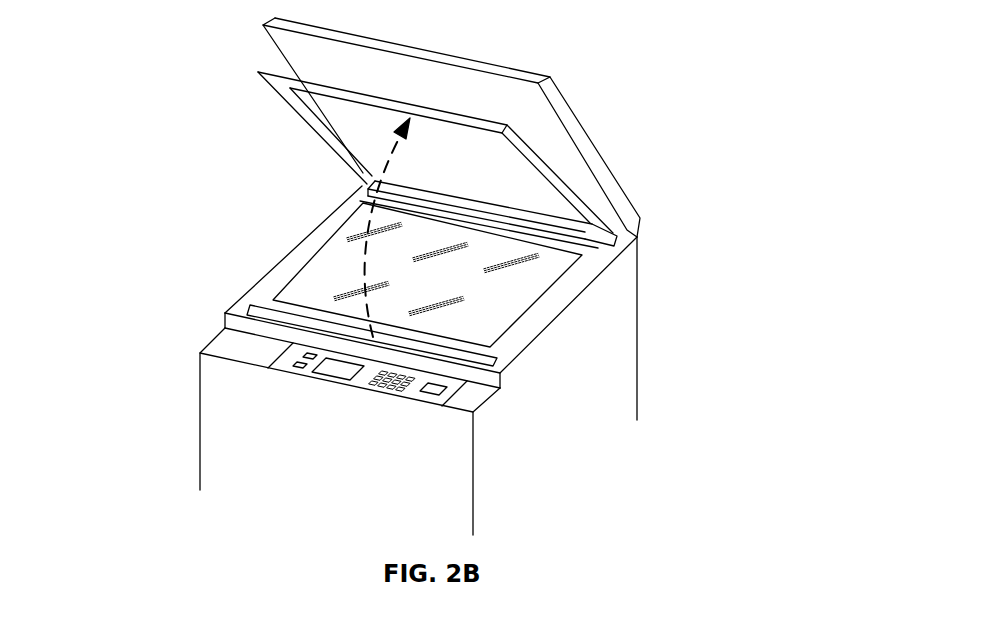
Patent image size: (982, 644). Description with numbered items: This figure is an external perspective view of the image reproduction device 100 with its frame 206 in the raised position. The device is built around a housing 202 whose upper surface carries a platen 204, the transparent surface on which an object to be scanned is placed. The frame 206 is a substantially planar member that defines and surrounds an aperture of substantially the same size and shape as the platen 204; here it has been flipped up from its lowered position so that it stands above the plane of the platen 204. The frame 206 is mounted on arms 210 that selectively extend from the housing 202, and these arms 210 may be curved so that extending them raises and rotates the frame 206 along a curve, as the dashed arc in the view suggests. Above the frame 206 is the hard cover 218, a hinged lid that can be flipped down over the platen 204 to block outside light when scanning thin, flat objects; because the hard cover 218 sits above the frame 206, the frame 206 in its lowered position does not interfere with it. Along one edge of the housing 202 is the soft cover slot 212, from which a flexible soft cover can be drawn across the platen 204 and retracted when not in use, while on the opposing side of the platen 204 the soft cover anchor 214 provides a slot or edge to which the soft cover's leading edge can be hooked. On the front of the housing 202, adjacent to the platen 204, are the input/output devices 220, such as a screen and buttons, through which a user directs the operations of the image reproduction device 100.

The image reproduction device 100 is at (171, 247).
The housing 202 is at (252, 347).
The platen 204 is at (337, 280).
The frame 206 is at (540, 168).
The arms 210 is at (620, 240).
The soft cover slot 212 is at (543, 233).
The soft cover anchor 214 is at (330, 319).
The hard cover 218 is at (527, 108).
The input/output devices 220 is at (355, 371).